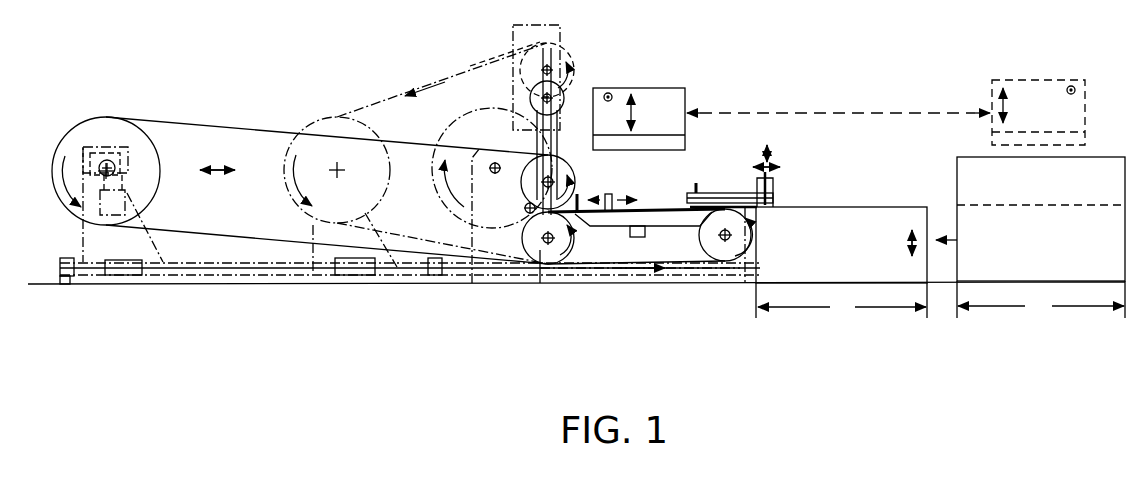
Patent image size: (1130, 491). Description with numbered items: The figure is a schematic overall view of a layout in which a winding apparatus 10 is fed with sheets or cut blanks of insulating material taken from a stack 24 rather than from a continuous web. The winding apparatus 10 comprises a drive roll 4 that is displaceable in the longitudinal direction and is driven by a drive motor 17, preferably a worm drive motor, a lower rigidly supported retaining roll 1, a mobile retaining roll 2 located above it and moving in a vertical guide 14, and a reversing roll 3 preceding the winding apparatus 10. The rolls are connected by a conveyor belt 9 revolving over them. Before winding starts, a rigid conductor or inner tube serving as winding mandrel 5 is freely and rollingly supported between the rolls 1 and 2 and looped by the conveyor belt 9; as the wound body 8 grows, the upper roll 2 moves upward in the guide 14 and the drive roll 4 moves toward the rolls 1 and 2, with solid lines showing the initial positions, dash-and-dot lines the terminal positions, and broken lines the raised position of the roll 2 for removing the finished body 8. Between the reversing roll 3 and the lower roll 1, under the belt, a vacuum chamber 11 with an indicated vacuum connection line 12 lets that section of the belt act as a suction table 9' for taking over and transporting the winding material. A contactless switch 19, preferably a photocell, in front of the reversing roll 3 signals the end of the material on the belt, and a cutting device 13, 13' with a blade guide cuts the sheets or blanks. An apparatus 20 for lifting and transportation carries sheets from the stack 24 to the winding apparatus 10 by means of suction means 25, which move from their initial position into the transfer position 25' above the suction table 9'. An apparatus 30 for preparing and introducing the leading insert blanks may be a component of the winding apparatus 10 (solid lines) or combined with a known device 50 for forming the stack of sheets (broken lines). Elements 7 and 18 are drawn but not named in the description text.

The winding apparatus 10 is at (214, 46).
The drive roll 4 is at (75, 145).
The drive motor 17 is at (102, 165).
The wound body 8 is at (490, 120).
The vertical guide 14 is at (552, 140).
The mobile retaining roll 2 is at (562, 62).
The lower retaining roll 1 is at (541, 253).
The winding mandrel 5 is at (523, 243).
The conveyor belt 9 is at (568, 276).
The suction table 9' is at (658, 189).
The vacuum chamber 11 is at (595, 218).
The vacuum connection line 12 is at (637, 234).
The stop 7 is at (580, 207).
The cutting device 13 is at (621, 189).
The cutting device 13' is at (617, 263).
The reversing roll 3 is at (707, 243).
The contactless switch 19 is at (742, 222).
The transfer position 25' is at (730, 167).
The suction means 25 is at (785, 169).
The frame 18 is at (412, 278).
The apparatus for lifting and transportation 20 is at (850, 195).
The apparatus for formation of a stack of sheets 50 is at (1053, 192).
The stack 24 is at (850, 253).
The apparatus for preparation and introduction of insert blanks 30 is at (676, 124).